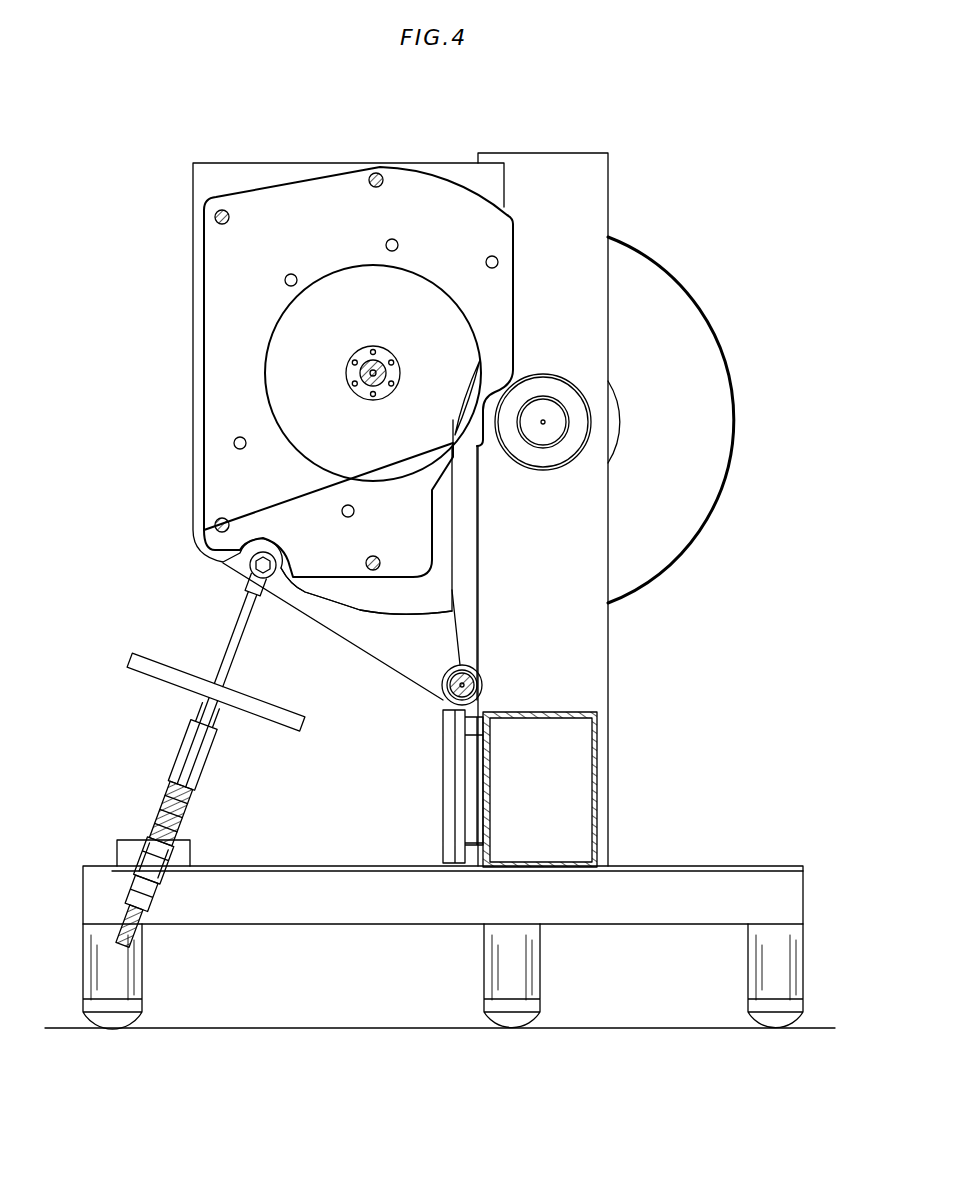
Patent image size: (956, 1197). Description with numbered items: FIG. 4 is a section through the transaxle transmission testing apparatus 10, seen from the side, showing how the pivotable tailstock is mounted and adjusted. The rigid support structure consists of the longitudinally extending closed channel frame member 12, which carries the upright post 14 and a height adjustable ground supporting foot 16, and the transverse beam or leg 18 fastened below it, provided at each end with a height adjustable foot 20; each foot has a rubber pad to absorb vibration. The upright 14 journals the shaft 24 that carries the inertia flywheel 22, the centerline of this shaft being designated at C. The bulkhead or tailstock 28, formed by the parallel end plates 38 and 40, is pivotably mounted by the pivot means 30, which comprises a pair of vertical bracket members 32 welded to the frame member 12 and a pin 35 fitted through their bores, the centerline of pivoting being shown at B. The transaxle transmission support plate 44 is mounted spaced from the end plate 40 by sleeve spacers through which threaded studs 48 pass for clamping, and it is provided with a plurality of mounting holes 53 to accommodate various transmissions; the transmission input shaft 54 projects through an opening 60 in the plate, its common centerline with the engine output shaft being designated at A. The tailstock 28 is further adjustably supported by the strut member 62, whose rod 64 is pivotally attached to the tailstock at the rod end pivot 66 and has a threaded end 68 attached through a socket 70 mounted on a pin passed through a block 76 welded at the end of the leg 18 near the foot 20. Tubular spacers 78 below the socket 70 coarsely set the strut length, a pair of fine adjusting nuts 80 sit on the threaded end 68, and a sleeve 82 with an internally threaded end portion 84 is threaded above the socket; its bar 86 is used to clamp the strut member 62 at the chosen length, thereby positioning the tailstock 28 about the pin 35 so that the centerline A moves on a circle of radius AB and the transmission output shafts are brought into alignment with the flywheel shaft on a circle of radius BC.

The transaxle transmission testing apparatus 10 is at (652, 686).
The frame member 12 is at (598, 785).
The upright post 14 is at (578, 597).
The ground supporting foot 16 is at (540, 975).
The transverse beam or leg 18 is at (292, 915).
The height adjustable foot 20 is at (142, 985).
The inertia flywheel 22 is at (726, 389).
The shaft 24 is at (566, 440).
The bulkhead or tailstock 28 is at (252, 128).
The pivot means 30 is at (438, 700).
The bracket member 32 is at (448, 800).
The pin 35 is at (470, 686).
The end plate 38 is at (305, 605).
The end plate 40 is at (199, 478).
The transaxle transmission support plate 44 is at (211, 421).
The threaded stud 48 is at (229, 221).
The mounting holes 53 is at (398, 243).
The transmission input shaft 54 is at (386, 373).
The opening 60 is at (276, 415).
The strut member 62 is at (224, 751).
The rod 64 is at (206, 675).
The rod end pivot 66 is at (268, 580).
The threaded end 68 is at (200, 816).
The socket 70 is at (187, 875).
The block 76 is at (195, 848).
The tubular spacer 78 is at (173, 905).
The fine adjusting nuts 80 is at (159, 941).
The sleeve 82 is at (169, 746).
The internally threaded end portion 84 is at (149, 813).
The bar 86 is at (223, 672).
The common centerline A is at (378, 356).
The centerline of pivoting B is at (470, 678).
The flywheel shaft centerline C is at (545, 420).